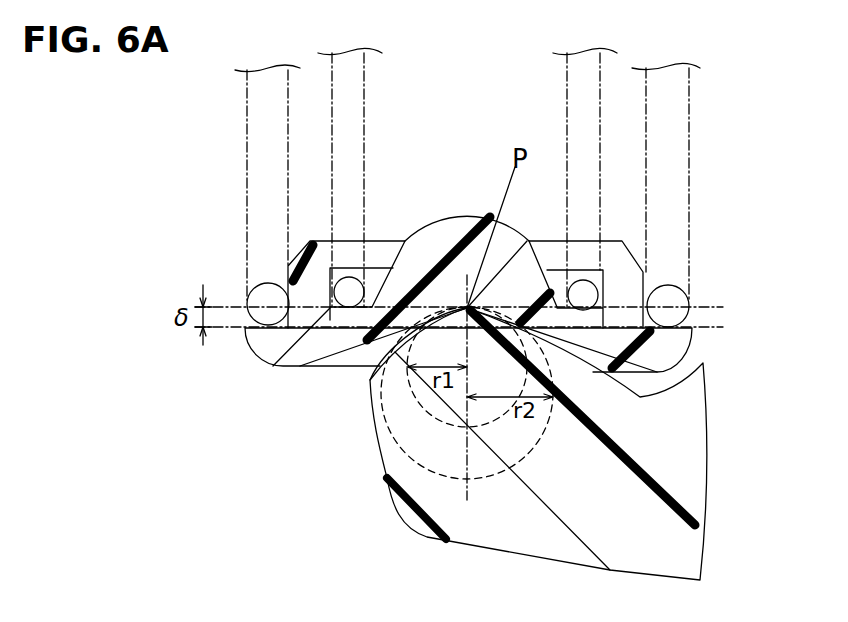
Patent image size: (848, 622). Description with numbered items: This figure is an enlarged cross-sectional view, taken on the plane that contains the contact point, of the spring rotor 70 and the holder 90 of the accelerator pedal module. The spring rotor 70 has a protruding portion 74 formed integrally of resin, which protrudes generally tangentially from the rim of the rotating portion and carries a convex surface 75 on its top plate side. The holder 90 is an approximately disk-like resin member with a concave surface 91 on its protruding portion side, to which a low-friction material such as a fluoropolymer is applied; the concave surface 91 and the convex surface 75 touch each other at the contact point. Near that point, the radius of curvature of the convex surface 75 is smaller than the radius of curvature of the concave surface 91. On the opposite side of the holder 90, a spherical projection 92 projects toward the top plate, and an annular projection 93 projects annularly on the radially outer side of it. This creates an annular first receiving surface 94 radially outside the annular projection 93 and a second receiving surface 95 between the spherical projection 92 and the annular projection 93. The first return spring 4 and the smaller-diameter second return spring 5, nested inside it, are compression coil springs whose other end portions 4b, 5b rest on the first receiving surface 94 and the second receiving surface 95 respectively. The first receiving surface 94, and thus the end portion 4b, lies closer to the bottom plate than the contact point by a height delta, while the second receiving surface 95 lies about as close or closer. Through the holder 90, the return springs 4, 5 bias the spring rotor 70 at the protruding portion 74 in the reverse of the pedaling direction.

The first return spring 4 is at (673, 93).
The second return spring 5 is at (583, 125).
The other end portion of the second return spring 5b is at (585, 290).
The second receiving surface 95 is at (565, 300).
The annular projection 93 is at (645, 275).
The other end portion of the first return spring 4b is at (668, 315).
The first receiving surface 94 is at (690, 313).
The holder 90 is at (531, 240).
The spherical projection 92 is at (453, 212).
The convex surface 75 is at (465, 305).
The concave surface 91 is at (467, 308).
The protruding portion 74 is at (387, 490).
The spring rotor 70 is at (508, 463).